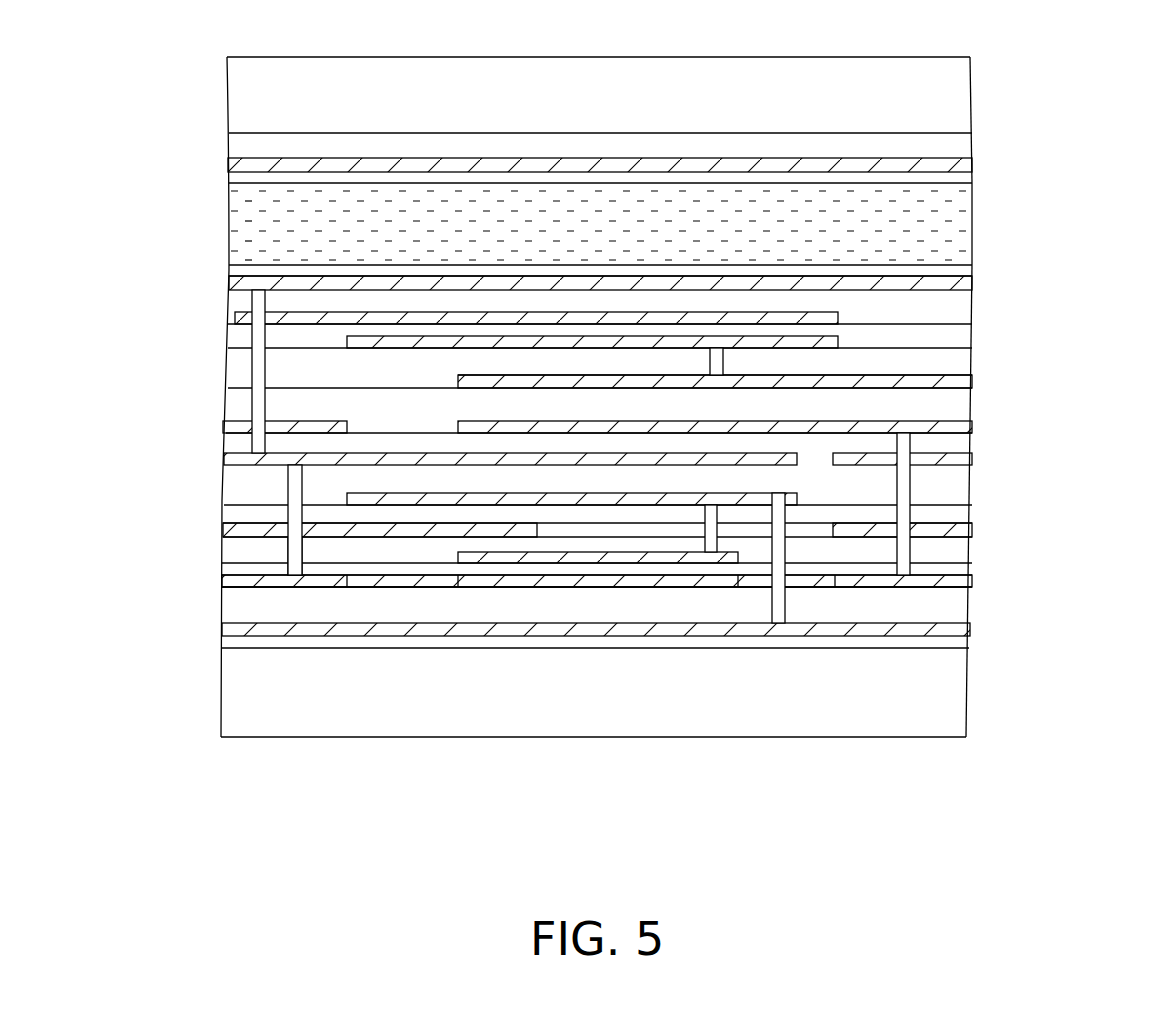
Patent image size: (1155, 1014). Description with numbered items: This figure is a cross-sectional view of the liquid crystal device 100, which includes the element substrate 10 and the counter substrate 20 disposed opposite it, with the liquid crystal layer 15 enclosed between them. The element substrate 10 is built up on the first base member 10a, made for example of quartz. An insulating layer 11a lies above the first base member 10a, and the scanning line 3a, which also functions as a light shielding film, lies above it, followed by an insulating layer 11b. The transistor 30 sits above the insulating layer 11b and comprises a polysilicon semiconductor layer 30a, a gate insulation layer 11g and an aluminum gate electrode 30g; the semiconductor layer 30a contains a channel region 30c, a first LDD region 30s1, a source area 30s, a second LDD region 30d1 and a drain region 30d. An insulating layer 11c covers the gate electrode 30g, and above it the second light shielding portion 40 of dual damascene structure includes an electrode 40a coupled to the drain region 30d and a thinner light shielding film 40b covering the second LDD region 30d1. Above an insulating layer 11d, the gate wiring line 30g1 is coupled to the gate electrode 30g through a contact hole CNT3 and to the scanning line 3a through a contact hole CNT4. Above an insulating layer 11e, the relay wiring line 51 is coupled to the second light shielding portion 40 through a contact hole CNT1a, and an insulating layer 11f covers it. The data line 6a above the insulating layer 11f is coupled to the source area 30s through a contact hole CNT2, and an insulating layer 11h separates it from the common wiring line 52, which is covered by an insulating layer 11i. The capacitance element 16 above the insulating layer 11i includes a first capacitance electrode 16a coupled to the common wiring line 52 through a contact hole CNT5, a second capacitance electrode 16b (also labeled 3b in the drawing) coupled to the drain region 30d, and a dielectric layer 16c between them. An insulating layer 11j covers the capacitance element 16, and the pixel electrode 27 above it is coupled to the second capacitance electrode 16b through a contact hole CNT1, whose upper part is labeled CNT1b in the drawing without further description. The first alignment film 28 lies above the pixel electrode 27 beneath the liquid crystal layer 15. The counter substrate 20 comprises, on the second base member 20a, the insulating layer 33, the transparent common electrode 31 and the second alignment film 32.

The liquid crystal device 100 is at (1100, 86).
The counter substrate 20 is at (661, 121).
The second base member 20a is at (963, 90).
The insulating layer 33 is at (963, 137).
The common electrode 31 is at (963, 165).
The second alignment film 32 is at (629, 177).
The liquid crystal layer 15 is at (963, 222).
The element substrate 10 is at (600, 506).
The first alignment film 28 is at (963, 271).
The pixel electrode 27 is at (963, 284).
The insulating layer 11j is at (963, 310).
The capacitance element 16 is at (633, 270).
The second capacitance electrode 16b is at (536, 274).
The detection electrode 3b is at (552, 313).
The dielectric layer 16c is at (627, 335).
The first capacitance electrode 16a is at (530, 223).
The insulating layer 11i is at (963, 362).
The common wiring line 52 is at (522, 376).
The insulating layer 11h is at (963, 405).
The data line 6a is at (596, 421).
The insulating layer 11f is at (963, 443).
The relay wiring line 51 is at (396, 453).
The insulating layer 11e is at (963, 485).
The gate wiring line 30g1 is at (600, 493).
The insulating layer 11d is at (963, 514).
The second light shielding portion 40 is at (321, 539).
The light shielding film 40b is at (347, 524).
The electrode 40a is at (288, 553).
The insulating layer 11c is at (963, 550).
The gate electrode 30g is at (605, 563).
The gate insulation layer 11g is at (963, 569).
The semiconductor layer 30a is at (963, 581).
The transistor 30 is at (597, 700).
The drain region 30d is at (325, 577).
The second LDD region 30d1 is at (412, 587).
The channel region 30c is at (548, 587).
The first LDD region 30s1 is at (758, 587).
The source area 30s is at (903, 686).
The insulating layer 11b is at (963, 605).
The scanning line 3a is at (963, 630).
The insulating layer 11a is at (963, 642).
The first base member 10a is at (630, 711).
The contact hole CNT1 is at (176, 432).
The contact hole CNT1a is at (288, 481).
The upper contact hole CNT1b is at (252, 368).
The contact hole CNT2 is at (897, 484).
The contact hole CNT3 is at (705, 537).
The contact hole CNT4 is at (786, 553).
The contact hole CNT5 is at (724, 360).